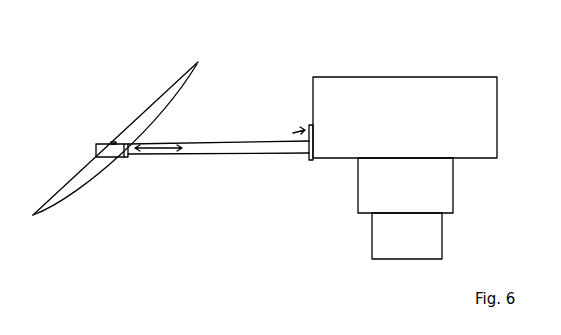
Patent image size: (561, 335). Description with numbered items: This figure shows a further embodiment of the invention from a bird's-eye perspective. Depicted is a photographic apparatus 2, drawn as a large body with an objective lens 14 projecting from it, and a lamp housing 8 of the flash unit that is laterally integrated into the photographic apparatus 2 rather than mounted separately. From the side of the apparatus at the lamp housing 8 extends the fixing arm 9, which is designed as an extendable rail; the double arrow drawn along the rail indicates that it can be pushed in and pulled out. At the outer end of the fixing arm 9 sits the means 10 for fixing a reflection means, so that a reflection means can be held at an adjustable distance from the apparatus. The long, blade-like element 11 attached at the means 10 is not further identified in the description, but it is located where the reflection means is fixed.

The photographic apparatus 2 is at (422, 87).
The lamp housing 8 is at (299, 134).
The fixing arm 9 is at (233, 140).
The means for fixing a reflection means 10 is at (124, 157).
The blade 11 is at (170, 102).
The objective lens 14 is at (430, 238).